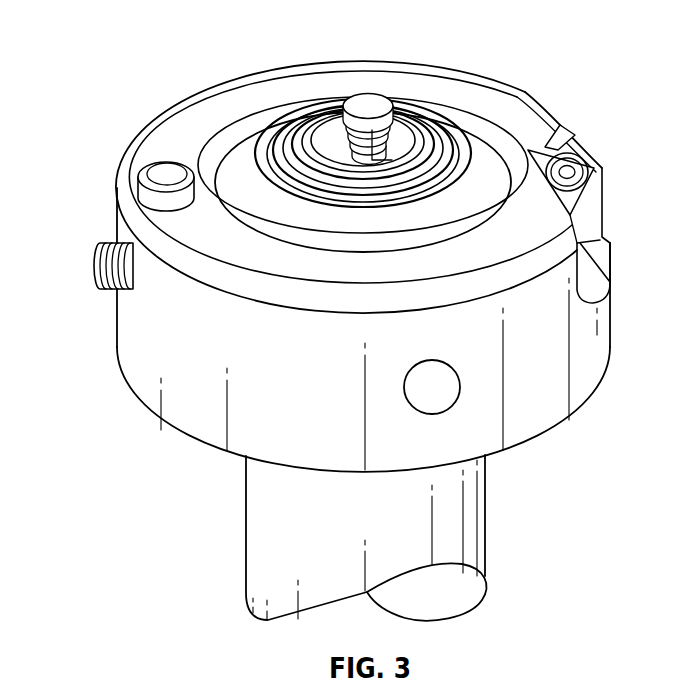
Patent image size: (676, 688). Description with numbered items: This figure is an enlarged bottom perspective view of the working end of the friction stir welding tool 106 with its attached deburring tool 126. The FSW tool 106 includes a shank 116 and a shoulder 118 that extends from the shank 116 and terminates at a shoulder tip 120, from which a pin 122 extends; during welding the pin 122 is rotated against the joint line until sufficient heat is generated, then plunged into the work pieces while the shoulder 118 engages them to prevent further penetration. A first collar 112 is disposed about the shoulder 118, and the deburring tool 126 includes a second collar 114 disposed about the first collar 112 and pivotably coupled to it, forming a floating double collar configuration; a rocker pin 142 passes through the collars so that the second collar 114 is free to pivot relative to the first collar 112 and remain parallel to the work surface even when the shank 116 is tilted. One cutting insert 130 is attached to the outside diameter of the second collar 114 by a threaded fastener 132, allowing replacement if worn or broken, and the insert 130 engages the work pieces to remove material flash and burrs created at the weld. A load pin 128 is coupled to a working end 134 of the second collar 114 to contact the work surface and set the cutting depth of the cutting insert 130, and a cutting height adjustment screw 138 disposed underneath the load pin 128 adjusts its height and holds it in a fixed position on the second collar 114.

The friction stir welding tool 106 is at (500, 128).
The first collar 112 is at (480, 143).
The second collar 114 is at (588, 338).
The shank 116 is at (468, 533).
The shoulder 118 is at (436, 148).
The shoulder tip 120 is at (358, 103).
The pin 122 is at (356, 103).
The deburring tool 126 is at (528, 86).
The load pin 128 is at (161, 170).
The cutting insert 130 is at (571, 140).
The threaded fastener 132 is at (581, 171).
The working end 134 is at (186, 118).
The cutting height adjustment screw 138 is at (96, 268).
The rocker pin 142 is at (441, 394).